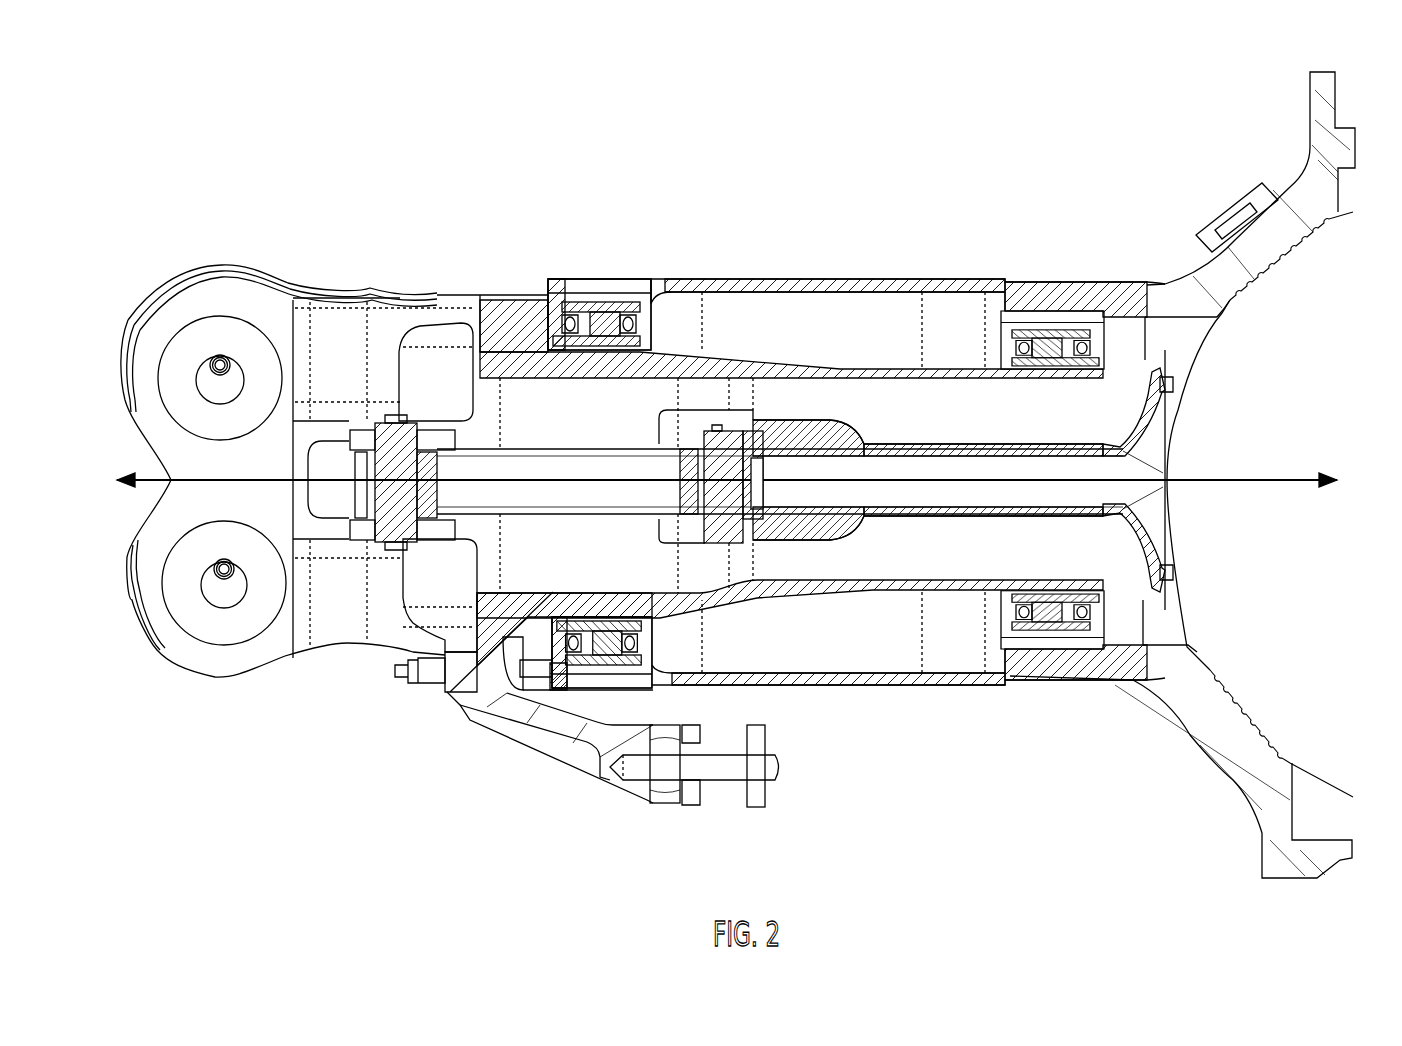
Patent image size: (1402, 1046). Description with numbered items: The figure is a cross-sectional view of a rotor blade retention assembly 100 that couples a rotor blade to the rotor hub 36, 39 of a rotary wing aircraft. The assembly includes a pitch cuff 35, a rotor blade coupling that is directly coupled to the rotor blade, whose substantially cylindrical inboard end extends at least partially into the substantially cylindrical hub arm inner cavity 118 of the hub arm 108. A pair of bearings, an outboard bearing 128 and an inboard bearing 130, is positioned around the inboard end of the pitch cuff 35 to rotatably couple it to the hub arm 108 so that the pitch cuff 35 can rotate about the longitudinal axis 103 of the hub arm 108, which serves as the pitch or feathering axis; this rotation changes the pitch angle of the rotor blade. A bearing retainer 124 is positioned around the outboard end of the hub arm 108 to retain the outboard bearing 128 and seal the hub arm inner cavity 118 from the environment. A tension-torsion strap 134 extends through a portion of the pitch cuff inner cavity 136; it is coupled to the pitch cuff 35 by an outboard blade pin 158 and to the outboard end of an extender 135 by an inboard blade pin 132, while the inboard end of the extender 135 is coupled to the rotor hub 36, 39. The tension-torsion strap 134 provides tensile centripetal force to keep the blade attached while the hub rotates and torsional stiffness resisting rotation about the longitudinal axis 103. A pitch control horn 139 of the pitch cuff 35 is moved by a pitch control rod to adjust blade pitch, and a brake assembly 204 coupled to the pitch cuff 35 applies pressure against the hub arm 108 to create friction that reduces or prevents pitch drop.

The rotor blade retention assembly 100 is at (178, 133).
The pitch cuff 35 is at (283, 278).
The outboard blade pin 158 is at (383, 425).
The bearing retainer 124 is at (547, 296).
The outboard bearing 128 is at (603, 300).
The hub arm inner cavity 118 is at (797, 307).
The hub arm 108 is at (938, 282).
The rotor hub 36 is at (1182, 475).
The rotor hub 39 is at (1280, 188).
The longitudinal axis 103 is at (1283, 478).
The tension-torsion strap 134 is at (625, 513).
The inboard blade pin 132 is at (729, 533).
The extender 135 is at (932, 519).
The pitch cuff inner cavity 136 is at (777, 570).
The inboard bearing 130 is at (1048, 646).
The brake assembly 204 is at (387, 722).
The pitch control horn 139 is at (742, 842).